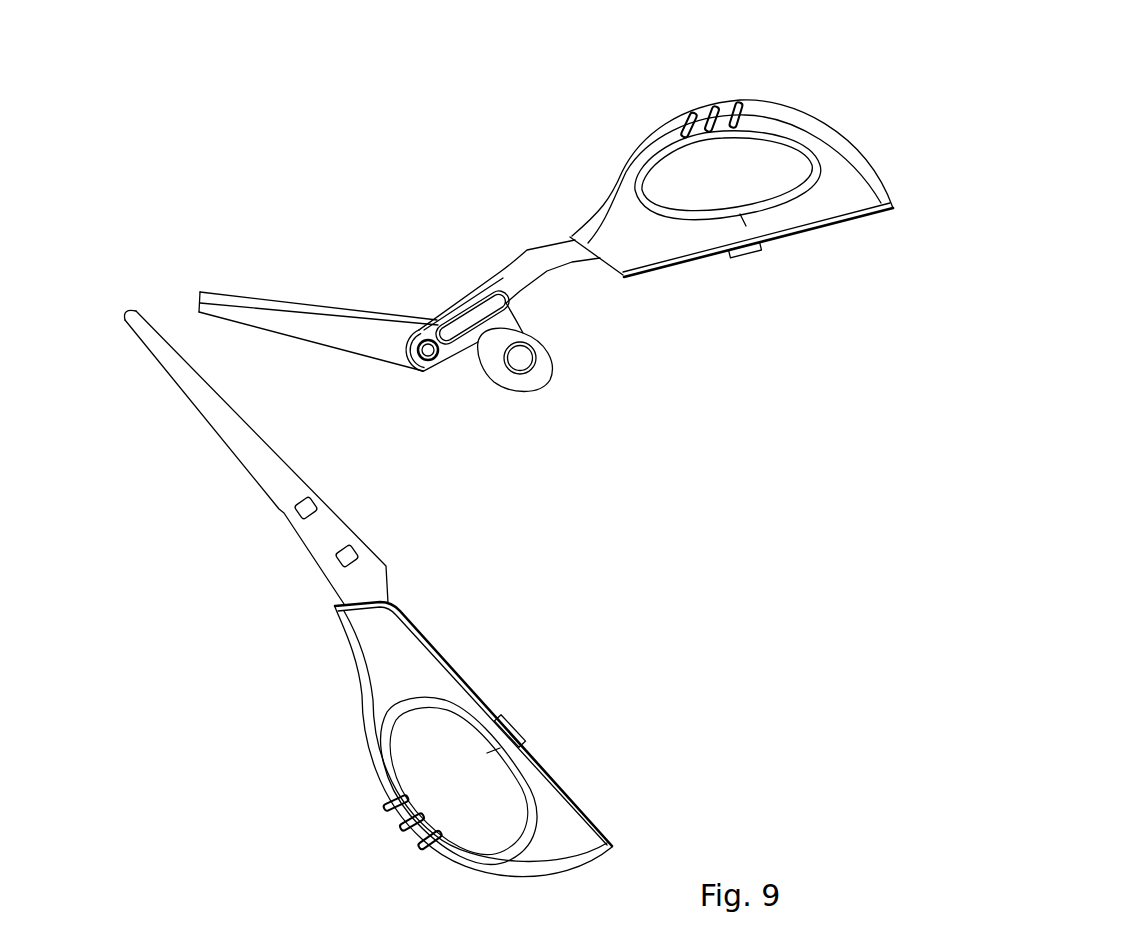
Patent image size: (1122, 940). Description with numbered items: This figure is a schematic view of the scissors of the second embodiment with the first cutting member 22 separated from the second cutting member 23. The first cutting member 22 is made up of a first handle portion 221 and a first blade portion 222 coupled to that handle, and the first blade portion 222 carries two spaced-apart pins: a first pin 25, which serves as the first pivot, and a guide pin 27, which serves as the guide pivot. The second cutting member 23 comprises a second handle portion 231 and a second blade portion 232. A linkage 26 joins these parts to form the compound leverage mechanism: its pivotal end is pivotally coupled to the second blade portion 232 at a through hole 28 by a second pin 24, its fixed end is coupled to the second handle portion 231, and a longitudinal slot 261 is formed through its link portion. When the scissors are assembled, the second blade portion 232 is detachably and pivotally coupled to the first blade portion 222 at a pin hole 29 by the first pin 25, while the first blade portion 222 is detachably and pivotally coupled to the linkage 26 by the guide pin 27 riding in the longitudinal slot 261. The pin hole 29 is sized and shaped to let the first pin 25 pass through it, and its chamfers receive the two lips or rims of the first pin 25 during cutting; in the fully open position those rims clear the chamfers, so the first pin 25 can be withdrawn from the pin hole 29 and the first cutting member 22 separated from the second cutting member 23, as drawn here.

The first cutting member 22 is at (285, 627).
The first handle portion 221 is at (438, 685).
The first blade portion 222 is at (240, 438).
The second cutting member 23 is at (532, 184).
The second handle portion 231 is at (834, 188).
The second blade portion 232 is at (292, 328).
The second pin 24 is at (432, 358).
The first pin 25 is at (347, 557).
The linkage 26 is at (520, 303).
The longitudinal slot 261 is at (468, 317).
The guide pin 27 is at (303, 507).
The through hole 28 is at (426, 345).
The pin hole 29 is at (523, 370).